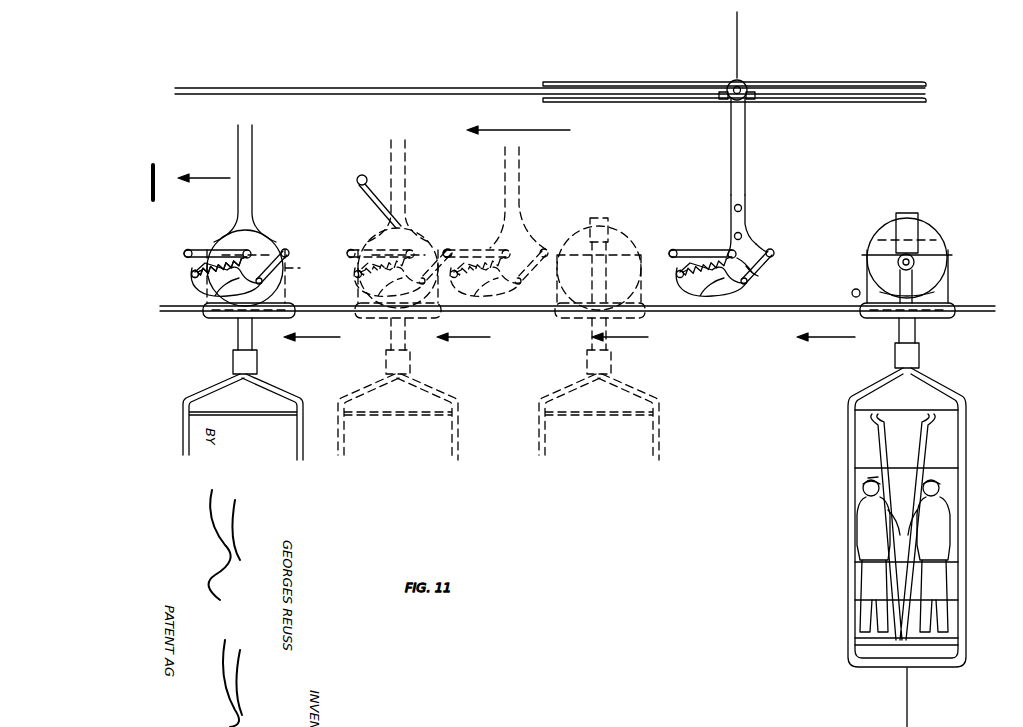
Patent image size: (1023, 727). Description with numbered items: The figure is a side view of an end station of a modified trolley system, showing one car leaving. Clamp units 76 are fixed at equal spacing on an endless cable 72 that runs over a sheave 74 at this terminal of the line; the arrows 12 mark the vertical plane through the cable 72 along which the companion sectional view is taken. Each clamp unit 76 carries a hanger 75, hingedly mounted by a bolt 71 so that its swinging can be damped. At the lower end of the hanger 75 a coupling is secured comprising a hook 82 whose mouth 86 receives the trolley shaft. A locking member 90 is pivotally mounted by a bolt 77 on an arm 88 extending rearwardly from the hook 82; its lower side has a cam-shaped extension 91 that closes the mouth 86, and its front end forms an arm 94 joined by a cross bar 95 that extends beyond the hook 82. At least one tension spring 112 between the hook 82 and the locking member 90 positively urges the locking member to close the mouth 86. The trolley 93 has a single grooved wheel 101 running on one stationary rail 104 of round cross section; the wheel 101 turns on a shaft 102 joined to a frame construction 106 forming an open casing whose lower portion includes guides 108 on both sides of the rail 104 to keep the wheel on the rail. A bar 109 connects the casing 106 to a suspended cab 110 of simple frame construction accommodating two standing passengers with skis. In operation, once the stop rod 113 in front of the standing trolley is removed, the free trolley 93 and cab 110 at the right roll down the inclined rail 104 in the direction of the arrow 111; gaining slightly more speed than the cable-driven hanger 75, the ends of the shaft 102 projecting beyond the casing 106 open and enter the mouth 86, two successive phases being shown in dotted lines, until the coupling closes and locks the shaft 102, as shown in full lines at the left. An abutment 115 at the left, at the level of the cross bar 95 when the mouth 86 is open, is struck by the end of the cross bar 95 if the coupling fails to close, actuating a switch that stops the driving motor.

The section line 12 is at (730, 47).
The bolt 71 is at (726, 100).
The endless cable 72 is at (473, 87).
The disk or sheave 74 is at (889, 88).
The hanger 75 is at (741, 153).
The clip or clamp unit 76 is at (726, 82).
The bolt 77 is at (775, 254).
The hook 82 is at (748, 233).
The mouth 86 is at (740, 284).
The arm 88 is at (753, 247).
The locking member 90 is at (714, 250).
The cam-shaped extension 91 is at (752, 274).
The trolley 93 is at (287, 243).
The arm 94 is at (686, 250).
The cross bar 95 is at (362, 175).
The wheel 101 is at (932, 272).
The shaft 102 is at (898, 257).
The rail 104 is at (811, 308).
The frame construction 106 is at (914, 238).
The guides 108 is at (942, 316).
The bar 109 is at (920, 338).
The cab 110 is at (966, 442).
The arrow 111 is at (570, 132).
The tension spring 112 is at (700, 262).
The rod 113 is at (852, 291).
The abutment 115 is at (153, 200).